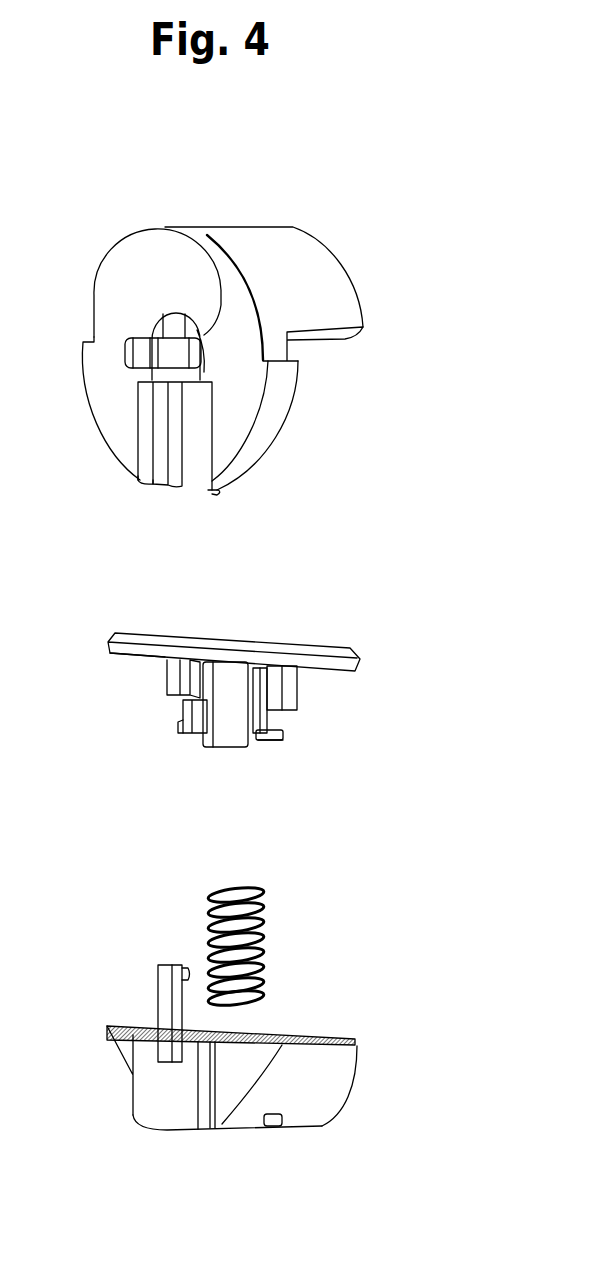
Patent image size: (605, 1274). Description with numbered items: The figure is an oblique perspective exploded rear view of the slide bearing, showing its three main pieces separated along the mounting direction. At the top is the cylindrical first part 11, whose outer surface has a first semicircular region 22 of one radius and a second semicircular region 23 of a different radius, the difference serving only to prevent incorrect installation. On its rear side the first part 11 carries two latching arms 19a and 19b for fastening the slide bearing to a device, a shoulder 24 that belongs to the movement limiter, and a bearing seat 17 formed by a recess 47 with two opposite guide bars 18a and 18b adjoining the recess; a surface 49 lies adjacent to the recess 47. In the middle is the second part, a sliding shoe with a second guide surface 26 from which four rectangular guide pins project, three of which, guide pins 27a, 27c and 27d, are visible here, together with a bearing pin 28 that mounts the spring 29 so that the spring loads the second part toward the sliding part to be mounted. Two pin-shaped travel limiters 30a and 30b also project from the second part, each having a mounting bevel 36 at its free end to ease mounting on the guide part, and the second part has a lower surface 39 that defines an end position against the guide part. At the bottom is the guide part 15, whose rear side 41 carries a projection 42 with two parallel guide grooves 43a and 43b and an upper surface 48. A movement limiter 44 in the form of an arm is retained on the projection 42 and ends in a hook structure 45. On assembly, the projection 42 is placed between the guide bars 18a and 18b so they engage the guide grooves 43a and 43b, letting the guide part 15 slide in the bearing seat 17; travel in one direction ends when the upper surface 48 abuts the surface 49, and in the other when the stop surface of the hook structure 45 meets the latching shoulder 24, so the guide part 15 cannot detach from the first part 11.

The first part 11 is at (314, 259).
The guide part 15 is at (312, 1091).
The bearing seat 17 is at (202, 454).
The guide bar 18a is at (213, 496).
The guide bar 18b is at (170, 472).
The latching arm 19a is at (120, 341).
The latching arm 19b is at (203, 330).
The first region of the outer surface 22 is at (281, 243).
The second region of the outer surface 23 is at (288, 399).
The shoulder 24 is at (173, 316).
The second guide surface 26 is at (193, 630).
The guide pin 27a is at (295, 691).
The guide pin 27c is at (166, 680).
The guide pin 27d is at (190, 698).
The bearing pin 28 is at (235, 682).
The spring 29 is at (267, 893).
The travel limiter 30a is at (287, 734).
The travel limiter 30b is at (192, 737).
The mounting bevel 36 is at (272, 742).
The lower surface 39 is at (140, 660).
The rear side 41 is at (245, 1075).
The projection 42 is at (161, 1100).
The guide groove 43a is at (224, 1057).
The guide groove 43b is at (132, 1068).
The movement limiter 44 is at (156, 987).
The hook structure 45 is at (168, 962).
The recess 47 is at (224, 483).
The upper surface 48 is at (150, 1024).
The surface adjacent to the recess 49 is at (128, 406).